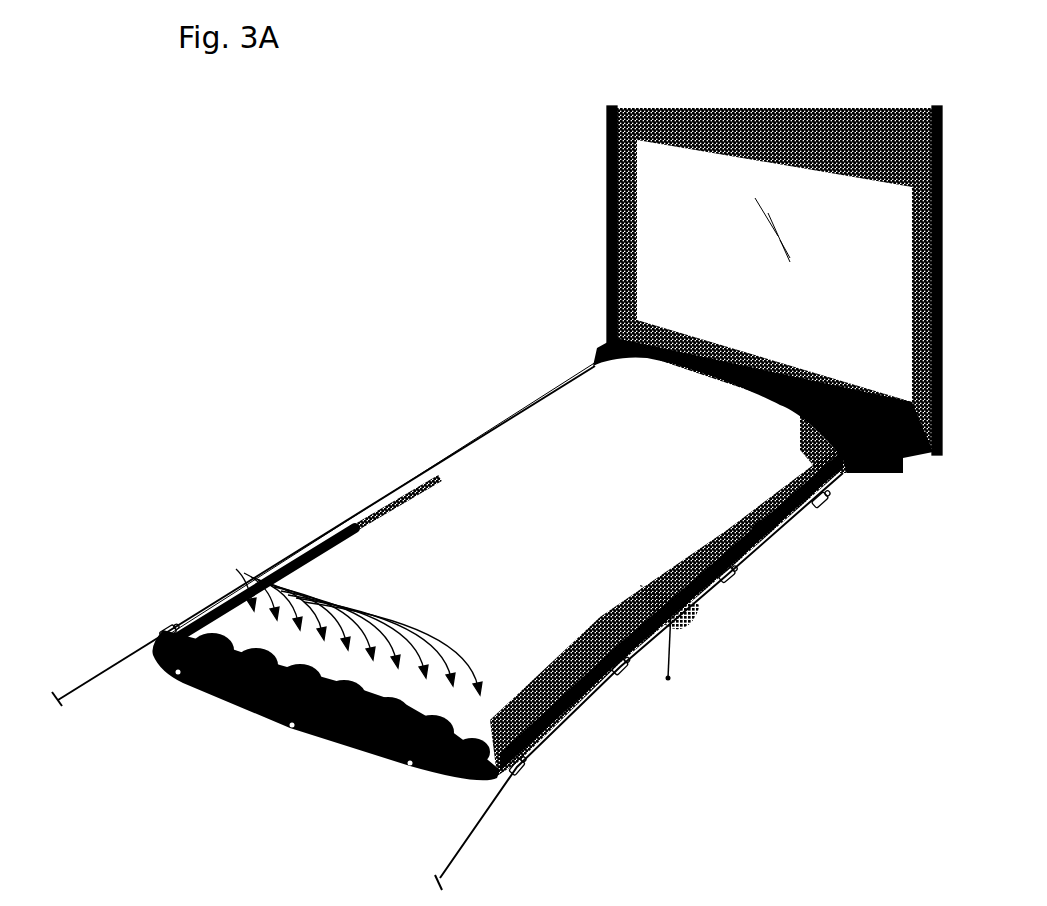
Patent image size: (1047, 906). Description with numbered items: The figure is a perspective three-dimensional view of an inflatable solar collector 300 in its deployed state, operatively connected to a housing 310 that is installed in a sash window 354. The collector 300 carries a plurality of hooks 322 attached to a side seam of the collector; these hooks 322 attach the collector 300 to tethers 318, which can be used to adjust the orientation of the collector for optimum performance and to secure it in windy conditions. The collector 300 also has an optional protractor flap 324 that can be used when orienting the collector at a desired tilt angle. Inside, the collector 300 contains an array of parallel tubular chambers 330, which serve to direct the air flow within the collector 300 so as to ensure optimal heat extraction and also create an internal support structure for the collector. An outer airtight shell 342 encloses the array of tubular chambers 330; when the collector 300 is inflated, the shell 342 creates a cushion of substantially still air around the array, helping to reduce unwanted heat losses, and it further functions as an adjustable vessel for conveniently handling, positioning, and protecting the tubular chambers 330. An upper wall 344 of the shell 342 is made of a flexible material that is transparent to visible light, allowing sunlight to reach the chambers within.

The inflatable solar collector 300 is at (486, 351).
The sash window 354 is at (946, 290).
The housing 310 is at (902, 473).
The upper wall 344 is at (475, 497).
The tubular chambers 330 is at (304, 602).
The tethers 318 is at (303, 550).
The hooks 322 is at (168, 626).
The outer airtight shell 342 is at (782, 531).
The protractor flap 324 is at (690, 630).